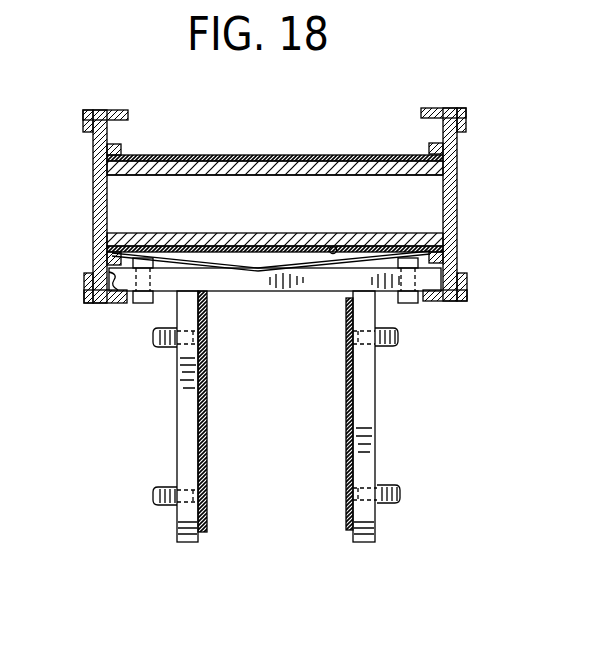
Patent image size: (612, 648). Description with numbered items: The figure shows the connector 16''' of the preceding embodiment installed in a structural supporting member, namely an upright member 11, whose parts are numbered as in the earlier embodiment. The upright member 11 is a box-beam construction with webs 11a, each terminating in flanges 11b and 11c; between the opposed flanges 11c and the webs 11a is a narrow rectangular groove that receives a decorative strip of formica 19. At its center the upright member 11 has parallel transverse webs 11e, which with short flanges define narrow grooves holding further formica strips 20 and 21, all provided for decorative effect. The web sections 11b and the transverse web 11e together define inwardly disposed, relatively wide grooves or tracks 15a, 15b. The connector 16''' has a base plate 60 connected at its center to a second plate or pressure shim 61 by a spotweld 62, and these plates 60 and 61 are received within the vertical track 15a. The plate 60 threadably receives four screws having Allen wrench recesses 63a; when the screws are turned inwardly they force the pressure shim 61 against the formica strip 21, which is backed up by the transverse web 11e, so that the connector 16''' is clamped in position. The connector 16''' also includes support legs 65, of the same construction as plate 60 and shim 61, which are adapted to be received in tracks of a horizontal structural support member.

The upright member 11 is at (280, 204).
The web 11a is at (93, 190).
The flange 11b is at (110, 110).
The flange 11c is at (83, 119).
The transverse web 11e is at (220, 175).
The track 15a is at (84, 297).
The track 15b is at (116, 144).
The connector 16''' is at (337, 416).
The formica strip 19 is at (93, 224).
The formica strip 20 is at (282, 155).
The formica strip 21 is at (334, 246).
The base plate 60 is at (238, 291).
The pressure shim 61 is at (395, 250).
The spotweld 62 is at (283, 262).
The Allen wrench recess 63a is at (137, 305).
The support leg 65 is at (172, 512).